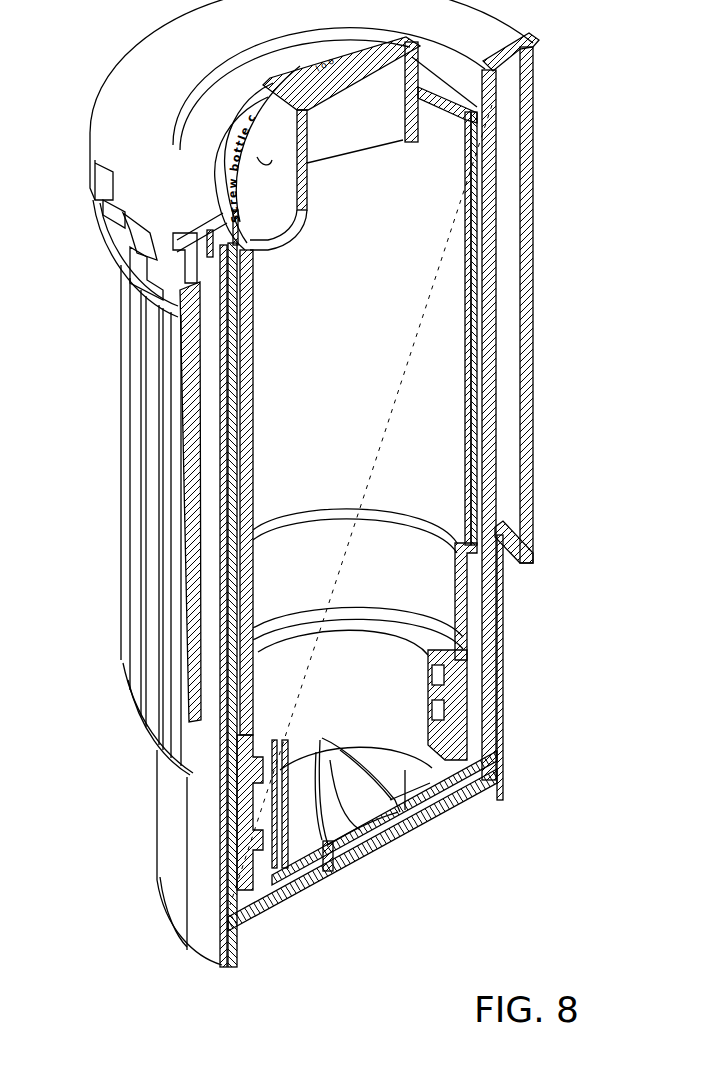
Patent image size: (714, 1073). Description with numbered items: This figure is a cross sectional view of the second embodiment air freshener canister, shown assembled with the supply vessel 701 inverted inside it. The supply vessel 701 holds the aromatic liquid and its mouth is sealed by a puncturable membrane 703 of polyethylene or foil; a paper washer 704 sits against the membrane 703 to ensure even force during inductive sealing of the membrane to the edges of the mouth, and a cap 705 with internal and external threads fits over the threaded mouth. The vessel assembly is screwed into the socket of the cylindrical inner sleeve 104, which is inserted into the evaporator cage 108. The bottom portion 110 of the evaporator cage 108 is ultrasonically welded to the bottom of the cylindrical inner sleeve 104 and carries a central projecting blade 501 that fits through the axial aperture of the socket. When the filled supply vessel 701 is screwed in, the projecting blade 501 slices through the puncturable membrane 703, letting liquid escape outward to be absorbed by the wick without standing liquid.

The supply vessel 701 is at (477, 300).
The puncturable membrane 703 is at (460, 662).
The paper washer 704 is at (423, 800).
The cap 705 is at (267, 887).
The projecting blade 501 is at (342, 825).
The bottom portion 110 is at (497, 790).
The evaporator cage 108 is at (170, 745).
The cylindrical inner sleeve 104 is at (225, 822).